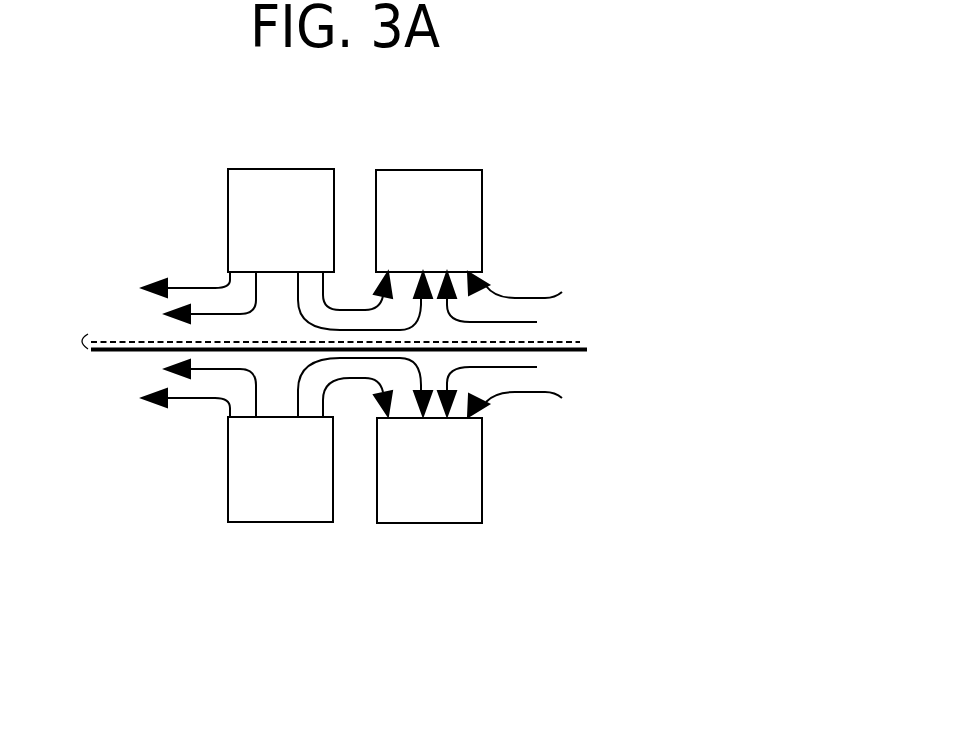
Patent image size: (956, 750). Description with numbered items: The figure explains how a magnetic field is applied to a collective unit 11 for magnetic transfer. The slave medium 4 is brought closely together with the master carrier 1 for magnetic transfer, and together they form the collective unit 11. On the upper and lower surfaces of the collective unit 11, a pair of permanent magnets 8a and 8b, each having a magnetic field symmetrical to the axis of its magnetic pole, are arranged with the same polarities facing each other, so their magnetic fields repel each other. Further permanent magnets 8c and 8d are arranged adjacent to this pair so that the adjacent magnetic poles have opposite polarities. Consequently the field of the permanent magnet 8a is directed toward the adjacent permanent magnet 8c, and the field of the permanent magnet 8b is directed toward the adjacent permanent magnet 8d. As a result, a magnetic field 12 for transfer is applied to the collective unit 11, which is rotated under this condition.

The permanent magnet 8a is at (240, 190).
The permanent magnet 8b is at (238, 508).
The permanent magnet 8c is at (473, 197).
The permanent magnet 8d is at (475, 507).
The magnetic field for transfer 12 is at (403, 322).
The master carrier for magnetic transfer 1 is at (557, 345).
The slave medium 4 is at (565, 355).
The collective unit 11 is at (82, 337).